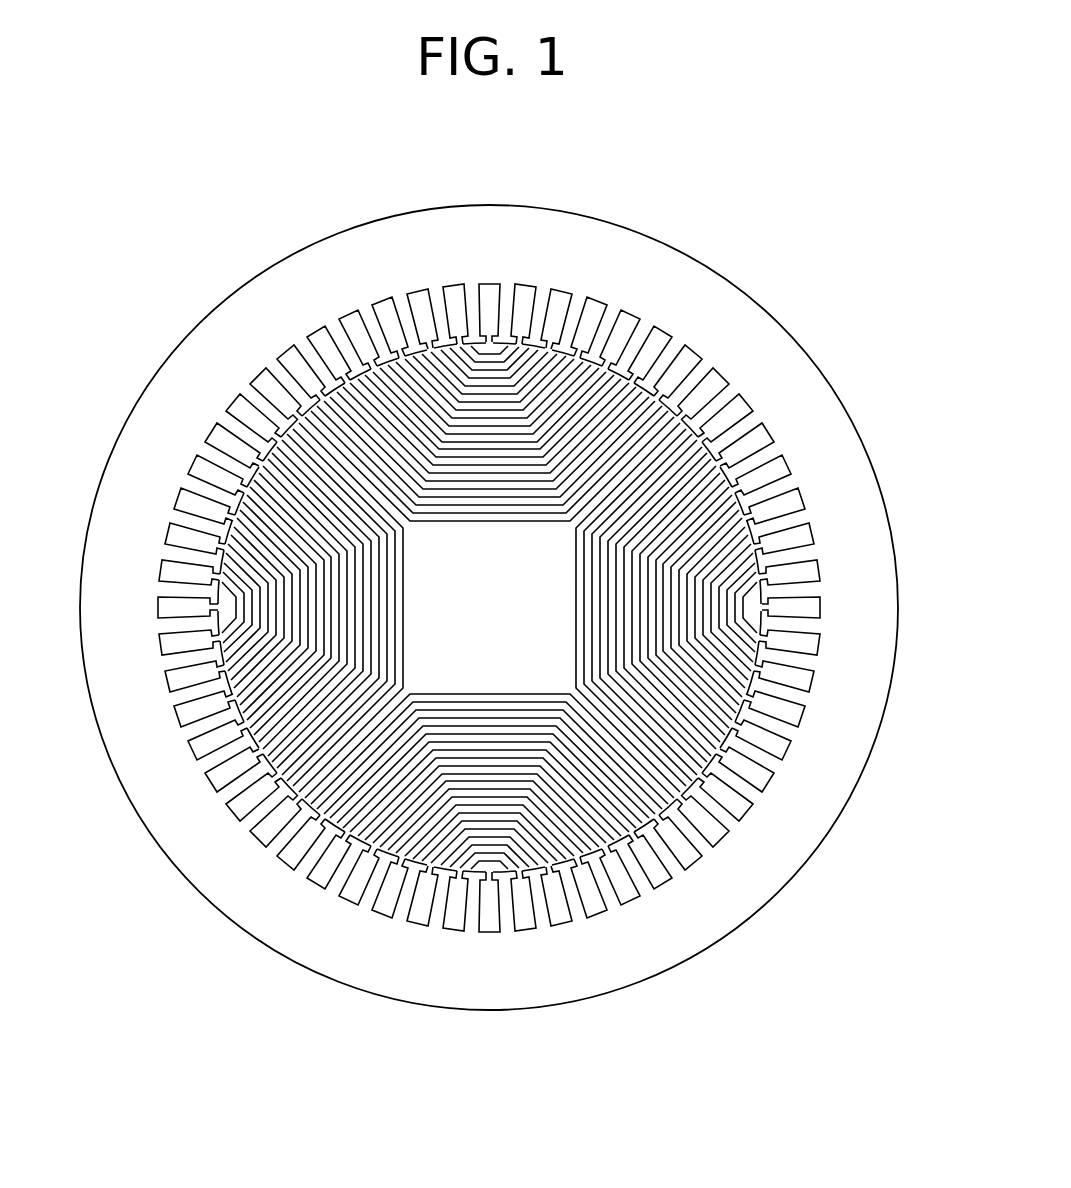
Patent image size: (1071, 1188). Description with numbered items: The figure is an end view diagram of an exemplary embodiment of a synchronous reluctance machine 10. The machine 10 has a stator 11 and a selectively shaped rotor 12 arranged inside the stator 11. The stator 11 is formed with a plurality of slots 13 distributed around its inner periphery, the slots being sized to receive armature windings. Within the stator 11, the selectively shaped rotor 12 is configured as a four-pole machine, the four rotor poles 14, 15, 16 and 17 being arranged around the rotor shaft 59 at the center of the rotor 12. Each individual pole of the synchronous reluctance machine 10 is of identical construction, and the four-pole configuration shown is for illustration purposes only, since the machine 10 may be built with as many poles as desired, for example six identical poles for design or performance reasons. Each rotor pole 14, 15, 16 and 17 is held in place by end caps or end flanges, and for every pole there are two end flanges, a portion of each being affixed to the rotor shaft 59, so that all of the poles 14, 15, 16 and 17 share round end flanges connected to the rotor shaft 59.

The synchronous reluctance machine 10 is at (889, 301).
The stator 11 is at (840, 408).
The rotor 12 is at (268, 802).
The stator slots 13 is at (242, 482).
The rotor pole 14 is at (405, 611).
The rotor pole 15 is at (468, 524).
The rotor pole 16 is at (575, 626).
The rotor pole 17 is at (499, 692).
The rotor shaft 59 is at (476, 633).